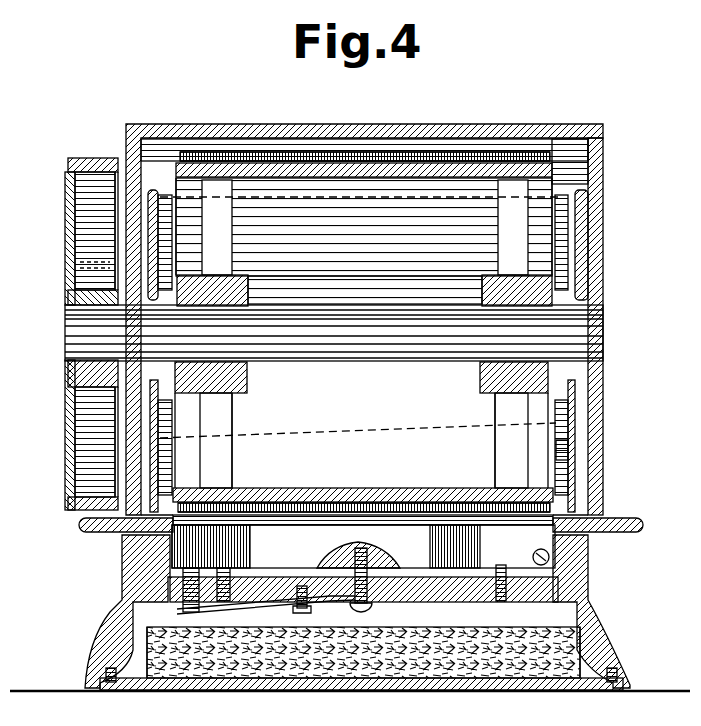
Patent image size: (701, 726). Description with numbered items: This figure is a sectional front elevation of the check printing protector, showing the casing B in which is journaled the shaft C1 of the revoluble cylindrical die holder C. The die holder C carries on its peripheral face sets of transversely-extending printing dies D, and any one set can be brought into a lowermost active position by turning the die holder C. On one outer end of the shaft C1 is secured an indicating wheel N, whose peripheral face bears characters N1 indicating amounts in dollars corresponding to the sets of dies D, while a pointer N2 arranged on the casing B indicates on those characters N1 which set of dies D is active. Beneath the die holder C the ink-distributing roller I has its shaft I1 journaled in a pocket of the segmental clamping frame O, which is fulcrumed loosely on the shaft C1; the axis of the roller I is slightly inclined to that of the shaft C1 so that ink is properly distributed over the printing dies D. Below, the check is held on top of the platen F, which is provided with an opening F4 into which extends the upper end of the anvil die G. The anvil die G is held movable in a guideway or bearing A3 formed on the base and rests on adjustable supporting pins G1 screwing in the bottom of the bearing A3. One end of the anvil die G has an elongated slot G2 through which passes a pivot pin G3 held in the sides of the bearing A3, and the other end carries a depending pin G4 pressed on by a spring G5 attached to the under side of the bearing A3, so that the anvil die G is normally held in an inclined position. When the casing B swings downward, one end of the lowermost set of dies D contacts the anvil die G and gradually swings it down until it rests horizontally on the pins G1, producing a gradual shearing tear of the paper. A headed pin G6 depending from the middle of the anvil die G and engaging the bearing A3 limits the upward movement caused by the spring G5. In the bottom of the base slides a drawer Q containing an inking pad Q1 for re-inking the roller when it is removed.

The printing dies D is at (281, 136).
The casing B is at (598, 243).
The die holder C is at (452, 150).
The shaft C1 is at (77, 336).
The indicating wheel N is at (72, 320).
The characters N1 is at (97, 160).
The pointer N2 is at (86, 264).
The ink-distributing roller I is at (320, 440).
The shaft I1 is at (570, 448).
The segmental clamping frame O is at (573, 413).
The platen F is at (84, 526).
The opening F4 is at (150, 529).
The anvil die G is at (305, 540).
The supporting pins G1 is at (503, 601).
The elongated slot G2 is at (240, 575).
The pivot pin G3 is at (532, 557).
The depending pin G4 is at (166, 590).
The spring G5 is at (248, 595).
The headed pin G6 is at (347, 585).
The bearing A3 is at (436, 596).
The drawer Q is at (582, 655).
The inking pad Q1 is at (366, 691).